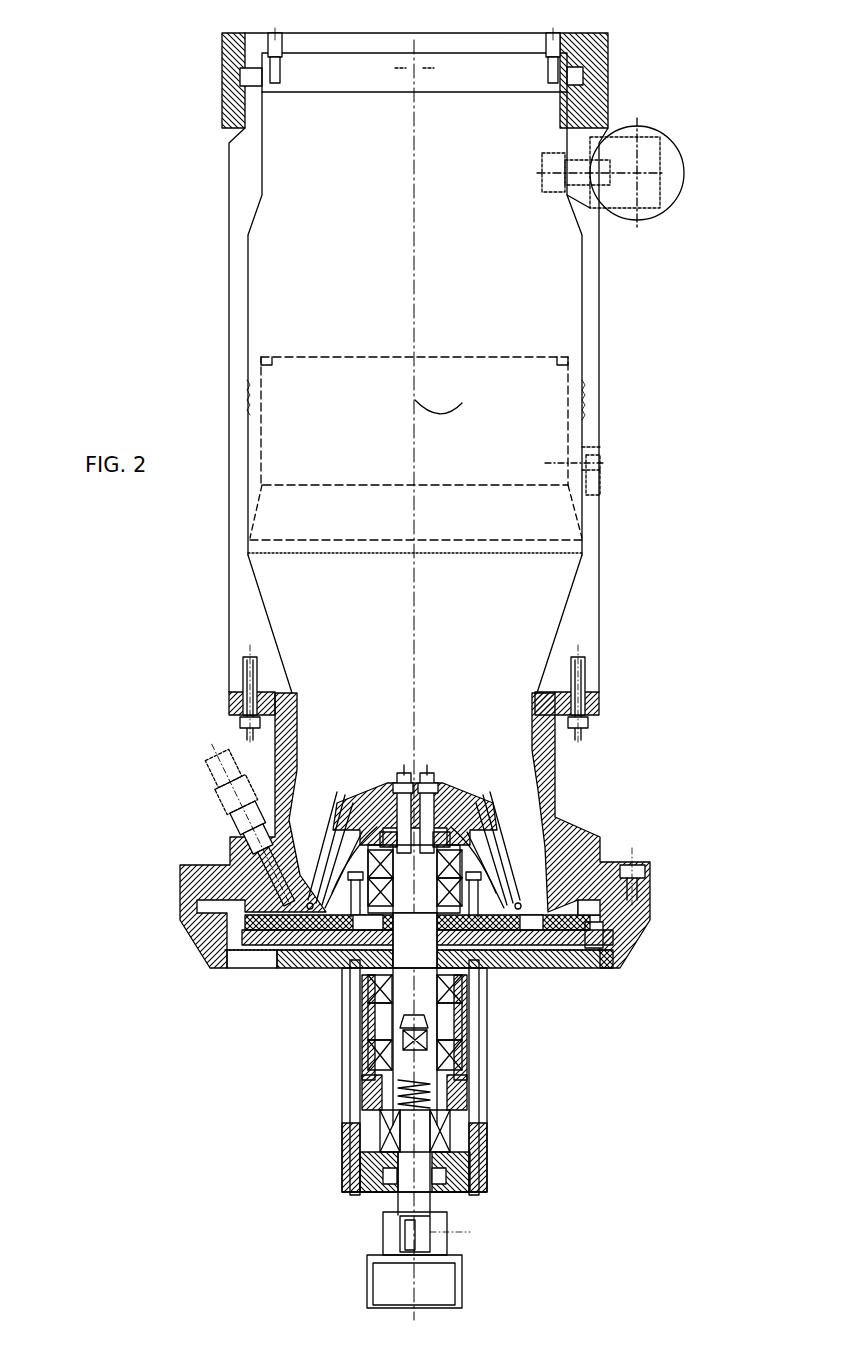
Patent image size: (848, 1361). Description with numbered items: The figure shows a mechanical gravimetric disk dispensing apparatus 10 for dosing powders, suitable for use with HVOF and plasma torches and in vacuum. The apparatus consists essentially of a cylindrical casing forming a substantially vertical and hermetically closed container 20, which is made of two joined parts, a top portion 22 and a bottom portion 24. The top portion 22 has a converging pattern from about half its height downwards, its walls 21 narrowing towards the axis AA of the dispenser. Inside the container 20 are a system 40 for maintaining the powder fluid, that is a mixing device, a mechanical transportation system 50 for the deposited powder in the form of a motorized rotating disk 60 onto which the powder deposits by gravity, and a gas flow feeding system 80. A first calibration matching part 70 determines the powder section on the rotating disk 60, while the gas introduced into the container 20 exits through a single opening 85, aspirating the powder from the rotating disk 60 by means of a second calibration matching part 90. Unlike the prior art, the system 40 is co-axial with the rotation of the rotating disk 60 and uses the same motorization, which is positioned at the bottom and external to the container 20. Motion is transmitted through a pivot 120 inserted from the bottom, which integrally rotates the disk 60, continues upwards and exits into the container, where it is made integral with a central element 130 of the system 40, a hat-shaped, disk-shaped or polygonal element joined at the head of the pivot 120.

The mechanical gravimetric disk dispensing apparatus 10 is at (113, 98).
The container 20 is at (602, 306).
The walls 21 is at (549, 640).
The top portion 22 is at (240, 168).
The bottom portion 24 is at (589, 832).
The system for maintaining the powder fluid 40 is at (360, 785).
The mechanical transportation system 50 is at (600, 934).
The rotating disk 60 is at (630, 951).
The first calibration matching part 70 is at (645, 907).
The gas flow feeding system 80 is at (240, 963).
The single opening 85 is at (216, 796).
The second calibration matching part 90 is at (243, 913).
The pivot 120 is at (430, 1005).
The central element 130 is at (457, 818).